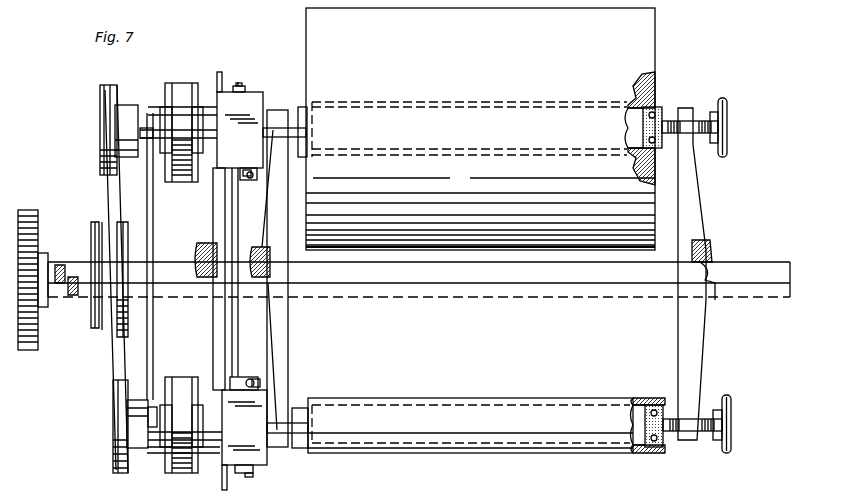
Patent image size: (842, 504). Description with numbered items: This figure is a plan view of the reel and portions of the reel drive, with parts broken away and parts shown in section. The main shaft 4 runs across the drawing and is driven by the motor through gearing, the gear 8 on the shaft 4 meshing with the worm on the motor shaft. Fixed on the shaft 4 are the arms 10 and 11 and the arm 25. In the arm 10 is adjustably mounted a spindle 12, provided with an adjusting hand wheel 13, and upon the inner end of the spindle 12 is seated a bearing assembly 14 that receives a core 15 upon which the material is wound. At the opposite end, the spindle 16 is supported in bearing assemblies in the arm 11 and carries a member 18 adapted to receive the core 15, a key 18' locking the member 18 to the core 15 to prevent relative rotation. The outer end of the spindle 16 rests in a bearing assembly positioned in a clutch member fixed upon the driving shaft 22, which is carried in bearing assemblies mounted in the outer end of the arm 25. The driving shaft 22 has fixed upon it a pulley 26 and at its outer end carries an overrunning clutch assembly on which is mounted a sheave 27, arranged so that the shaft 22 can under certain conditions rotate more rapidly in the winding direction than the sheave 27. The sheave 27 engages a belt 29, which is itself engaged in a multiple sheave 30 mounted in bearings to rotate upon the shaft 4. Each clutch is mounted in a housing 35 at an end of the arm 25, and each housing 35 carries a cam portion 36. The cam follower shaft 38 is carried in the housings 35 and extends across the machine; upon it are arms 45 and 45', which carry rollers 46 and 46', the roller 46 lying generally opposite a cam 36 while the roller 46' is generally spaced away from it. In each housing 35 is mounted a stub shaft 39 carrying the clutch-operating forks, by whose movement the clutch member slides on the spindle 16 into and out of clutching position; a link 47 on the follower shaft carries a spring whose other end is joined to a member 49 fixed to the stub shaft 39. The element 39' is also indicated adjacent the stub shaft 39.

The shaft 4 is at (74, 278).
The gear 8 is at (30, 352).
The arm 10 is at (700, 330).
The arm 11 is at (281, 338).
The spindle 12 is at (668, 122).
The adjusting hand wheel 13 is at (727, 112).
The bearing assembly 14 is at (655, 115).
The core 15 is at (655, 160).
The spindle 16 is at (296, 138).
The member 18 is at (469, 230).
The key 18' is at (471, 272).
The driving shaft 22 is at (141, 128).
The arm 25 is at (153, 190).
The pulley 26 is at (182, 90).
The sheave 27 is at (100, 97).
The belt 29 is at (106, 187).
The multiple sheave 30 is at (103, 335).
The clutch housing 35 is at (256, 100).
The cam portion 36 is at (222, 72).
The shaft 38 is at (235, 211).
The stub shaft 39 is at (275, 279).
The bracket 39' is at (251, 185).
The arm 45 is at (235, 81).
The arm 45' is at (247, 484).
The roller 46 is at (250, 70).
The roller 46' is at (266, 484).
The link 47 is at (231, 380).
The member 49 is at (260, 382).